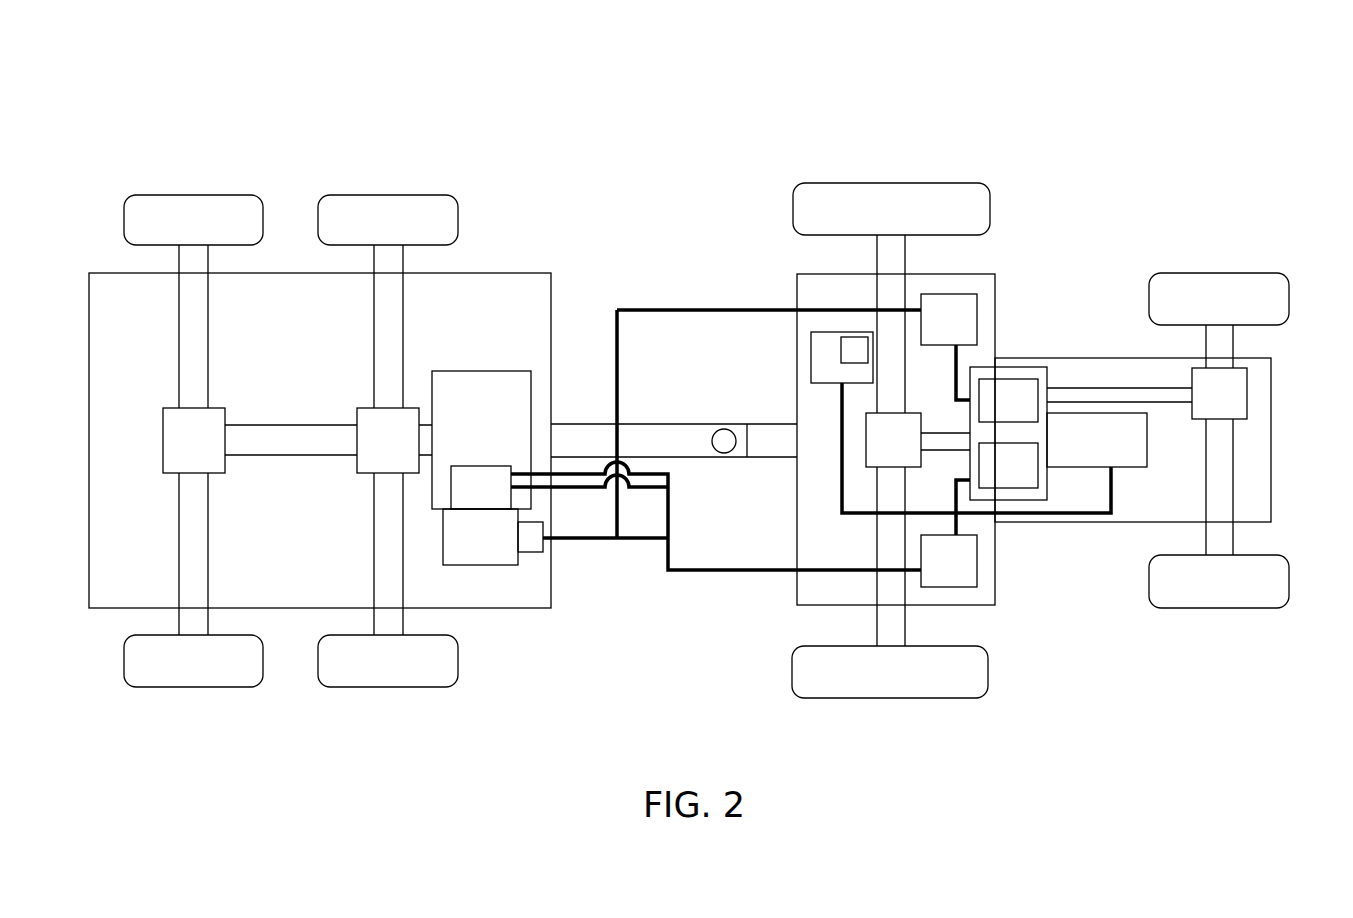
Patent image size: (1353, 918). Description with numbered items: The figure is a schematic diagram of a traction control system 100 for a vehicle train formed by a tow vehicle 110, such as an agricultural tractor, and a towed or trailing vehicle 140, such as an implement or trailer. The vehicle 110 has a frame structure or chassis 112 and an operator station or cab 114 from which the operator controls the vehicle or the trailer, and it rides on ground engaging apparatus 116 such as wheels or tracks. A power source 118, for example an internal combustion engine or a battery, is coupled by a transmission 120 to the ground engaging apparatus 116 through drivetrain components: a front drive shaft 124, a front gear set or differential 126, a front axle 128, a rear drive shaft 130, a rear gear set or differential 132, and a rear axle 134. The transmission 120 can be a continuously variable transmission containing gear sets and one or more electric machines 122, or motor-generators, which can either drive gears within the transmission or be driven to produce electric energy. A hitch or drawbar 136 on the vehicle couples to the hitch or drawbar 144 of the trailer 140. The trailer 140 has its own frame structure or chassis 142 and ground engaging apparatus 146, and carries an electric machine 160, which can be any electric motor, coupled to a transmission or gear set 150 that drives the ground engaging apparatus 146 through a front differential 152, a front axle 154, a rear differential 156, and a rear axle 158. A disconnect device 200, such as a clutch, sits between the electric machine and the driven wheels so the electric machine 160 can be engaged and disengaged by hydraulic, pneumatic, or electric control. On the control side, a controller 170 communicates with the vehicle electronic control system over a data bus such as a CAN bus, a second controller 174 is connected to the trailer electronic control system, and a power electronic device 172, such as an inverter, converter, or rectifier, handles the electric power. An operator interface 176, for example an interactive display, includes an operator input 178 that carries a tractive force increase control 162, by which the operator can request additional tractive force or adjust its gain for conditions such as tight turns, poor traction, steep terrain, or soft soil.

The traction control system 100 is at (636, 82).
The tow vehicle 110 is at (1095, 138).
The frame structure or chassis 112 is at (1244, 499).
The operator station or cab 114 is at (967, 596).
The ground engaging apparatus 116 is at (882, 668).
The power source 118 is at (1076, 452).
The transmission 120 is at (1027, 372).
The electric machine 122 is at (987, 414).
The front drive shaft 124 is at (1099, 395).
The front gear set or differential 126 is at (1198, 405).
The front axle 128 is at (1223, 469).
The rear drive shaft 130 is at (942, 442).
The rear gear set or differential 132 is at (872, 450).
The rear axle 134 is at (893, 545).
The hitch or drawbar 136 is at (769, 440).
The towed or trailing vehicle 140 is at (318, 133).
The frame structure or chassis 142 is at (288, 557).
The hitch or drawbar 144 is at (650, 437).
The ground engaging apparatus 146 is at (192, 658).
The transmission or gear set 150 is at (460, 429).
The front differential 152 is at (367, 452).
The front axle 154 is at (387, 377).
The rear differential 156 is at (173, 452).
The rear axle 158 is at (198, 315).
The electric machine 160 is at (459, 552).
The tractive force increase control 162 is at (842, 339).
The controller 170 is at (928, 573).
The power electronic device 172 is at (928, 333).
The second controller 174 is at (529, 544).
The operator interface 176 is at (833, 372).
The operator input 178 is at (840, 348).
The disconnect device 200 is at (460, 502).